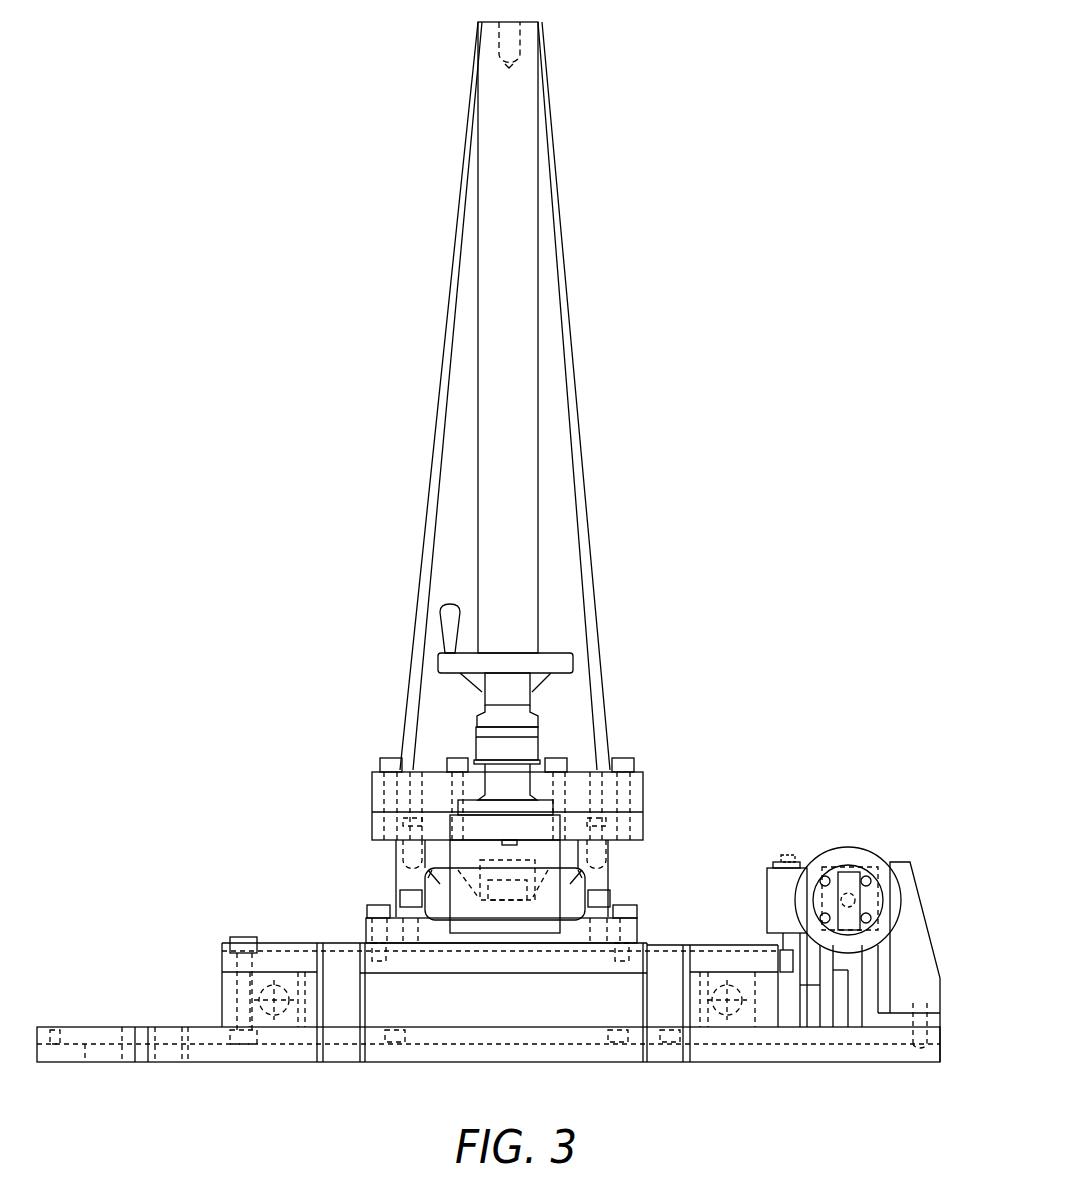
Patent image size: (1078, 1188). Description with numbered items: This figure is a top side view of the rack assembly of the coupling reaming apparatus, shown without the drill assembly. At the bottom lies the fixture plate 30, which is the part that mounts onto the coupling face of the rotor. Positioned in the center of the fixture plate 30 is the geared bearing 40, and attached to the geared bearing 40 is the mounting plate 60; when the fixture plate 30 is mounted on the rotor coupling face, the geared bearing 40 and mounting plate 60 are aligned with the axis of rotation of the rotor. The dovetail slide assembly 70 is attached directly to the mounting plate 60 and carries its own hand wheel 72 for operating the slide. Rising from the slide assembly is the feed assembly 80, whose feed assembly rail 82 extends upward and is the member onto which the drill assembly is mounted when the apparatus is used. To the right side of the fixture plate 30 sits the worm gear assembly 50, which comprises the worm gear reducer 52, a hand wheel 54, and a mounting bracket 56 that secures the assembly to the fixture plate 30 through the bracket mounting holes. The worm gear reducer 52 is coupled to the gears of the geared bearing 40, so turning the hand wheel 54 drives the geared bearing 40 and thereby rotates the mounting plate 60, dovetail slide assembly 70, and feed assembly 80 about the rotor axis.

The fixture plate 30 is at (191, 1062).
The geared bearing 40 is at (455, 1022).
The worm gear assembly 50 is at (767, 900).
The worm gear reducer 52 is at (797, 862).
The hand wheel 54 is at (855, 850).
The mounting bracket 56 is at (912, 896).
The mounting plate 60 is at (330, 943).
The dovetail slide assembly 70 is at (410, 795).
The hand wheel 72 is at (572, 663).
The feed assembly 80 is at (556, 422).
The feed assembly rail 82 is at (526, 202).